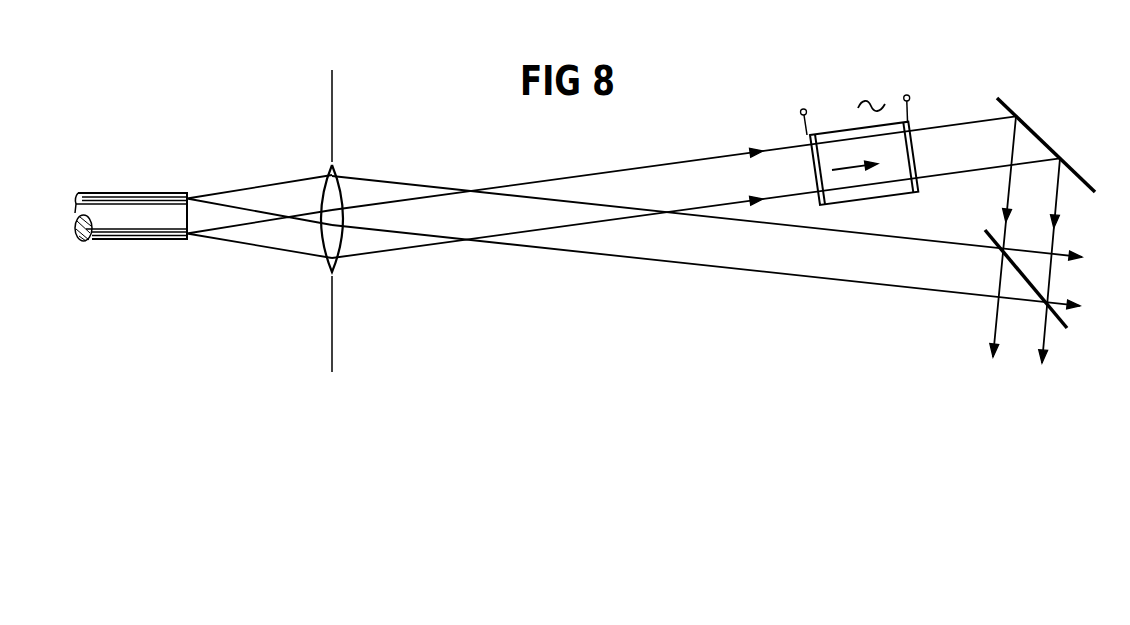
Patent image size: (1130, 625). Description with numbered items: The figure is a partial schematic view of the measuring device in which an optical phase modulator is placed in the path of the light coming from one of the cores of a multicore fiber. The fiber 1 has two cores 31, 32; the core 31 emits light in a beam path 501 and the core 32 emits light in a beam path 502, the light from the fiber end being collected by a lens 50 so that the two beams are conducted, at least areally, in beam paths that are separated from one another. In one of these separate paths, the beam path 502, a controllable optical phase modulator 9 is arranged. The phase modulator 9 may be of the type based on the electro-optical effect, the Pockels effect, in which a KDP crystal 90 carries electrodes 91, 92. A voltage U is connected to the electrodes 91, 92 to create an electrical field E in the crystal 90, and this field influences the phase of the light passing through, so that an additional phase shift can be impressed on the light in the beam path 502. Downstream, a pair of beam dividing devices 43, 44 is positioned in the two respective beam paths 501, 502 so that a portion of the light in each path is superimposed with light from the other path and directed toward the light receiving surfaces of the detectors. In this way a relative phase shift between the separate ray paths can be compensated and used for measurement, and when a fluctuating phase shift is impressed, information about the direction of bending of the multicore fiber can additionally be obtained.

The fiber 1 is at (138, 193).
The core 31 is at (97, 203).
The core 32 is at (93, 238).
The collimating lens 50 is at (333, 173).
The beam path 501 is at (780, 225).
The beam path 502 is at (733, 201).
The phase modulator 9 is at (861, 149).
The electro-optic crystal 90 is at (884, 198).
The electrode 91 is at (801, 112).
The electrode 92 is at (910, 98).
The beam dividing device 43 is at (1072, 329).
The beam dividing device 44 is at (1003, 104).